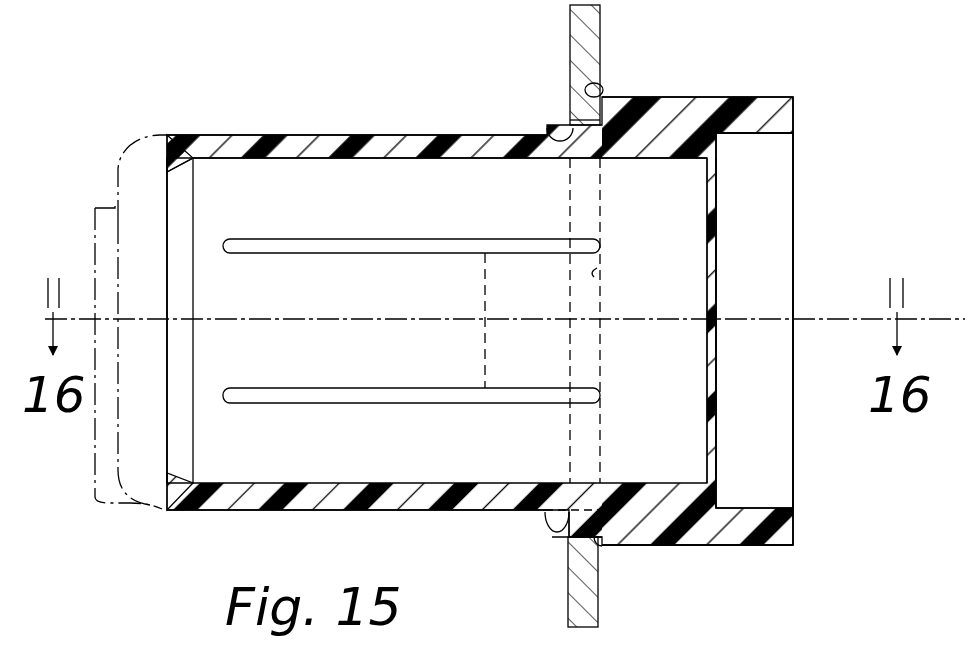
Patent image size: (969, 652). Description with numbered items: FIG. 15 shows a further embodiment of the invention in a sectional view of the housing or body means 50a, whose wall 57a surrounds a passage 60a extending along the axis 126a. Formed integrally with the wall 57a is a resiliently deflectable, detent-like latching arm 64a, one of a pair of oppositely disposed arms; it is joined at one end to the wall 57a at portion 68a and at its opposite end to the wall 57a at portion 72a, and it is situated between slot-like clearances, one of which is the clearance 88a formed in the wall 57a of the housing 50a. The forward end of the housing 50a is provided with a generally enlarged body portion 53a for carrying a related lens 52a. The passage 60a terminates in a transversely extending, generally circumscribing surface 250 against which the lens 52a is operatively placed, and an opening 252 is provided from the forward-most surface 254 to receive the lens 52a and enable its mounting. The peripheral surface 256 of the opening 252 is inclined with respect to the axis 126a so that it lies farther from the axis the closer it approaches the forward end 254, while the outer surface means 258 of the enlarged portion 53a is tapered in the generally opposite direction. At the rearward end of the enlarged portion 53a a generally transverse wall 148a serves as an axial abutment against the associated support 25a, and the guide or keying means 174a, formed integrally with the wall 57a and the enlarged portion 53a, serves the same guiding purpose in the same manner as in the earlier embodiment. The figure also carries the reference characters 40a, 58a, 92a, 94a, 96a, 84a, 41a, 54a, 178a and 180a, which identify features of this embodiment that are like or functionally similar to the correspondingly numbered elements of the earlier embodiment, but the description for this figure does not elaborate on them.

The tubular body 40a is at (235, 126).
The enlarged body portion 53a is at (782, 95).
The wall 57a is at (274, 146).
The top wall portion 58a is at (410, 134).
The passage 60a is at (333, 160).
The housing 50a is at (257, 511).
The portion 68a is at (236, 353).
The end wall 92a is at (162, 267).
The corner chamfers 96a is at (198, 160).
The cap joint 94a is at (180, 167).
The upper slot 84a is at (411, 267).
The latching arm 64a is at (410, 406).
The slot-like clearance 88a is at (340, 390).
The portion 72a is at (598, 345).
The support 25a is at (578, 15).
The upper recess 41a is at (548, 127).
The transverse wall 148a is at (600, 84).
The guide or keying means 174a is at (556, 538).
The lower recess 178a is at (556, 524).
The lower flange 180a is at (600, 538).
The cap 54a is at (134, 142).
The peripheral surface 256 is at (792, 133).
The opening 252 is at (758, 138).
The lens 52a is at (717, 228).
The circumscribing surface 250 is at (710, 490).
The forward-most surface 254 is at (794, 528).
The outer surface means 258 is at (731, 546).
The axis 126a is at (766, 318).